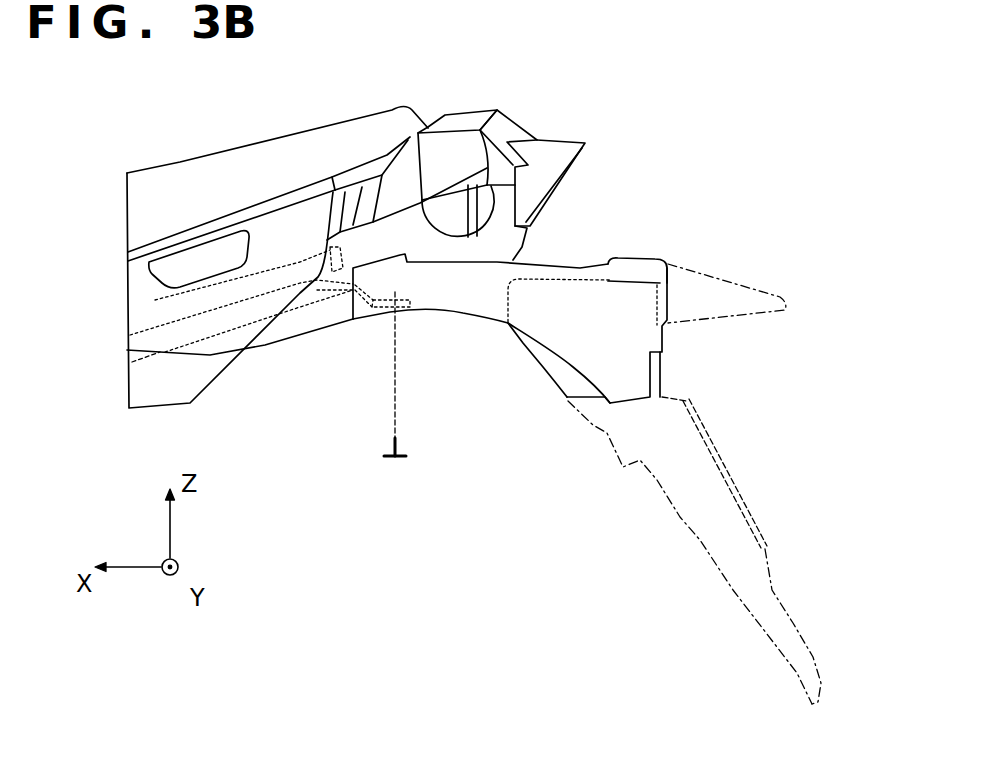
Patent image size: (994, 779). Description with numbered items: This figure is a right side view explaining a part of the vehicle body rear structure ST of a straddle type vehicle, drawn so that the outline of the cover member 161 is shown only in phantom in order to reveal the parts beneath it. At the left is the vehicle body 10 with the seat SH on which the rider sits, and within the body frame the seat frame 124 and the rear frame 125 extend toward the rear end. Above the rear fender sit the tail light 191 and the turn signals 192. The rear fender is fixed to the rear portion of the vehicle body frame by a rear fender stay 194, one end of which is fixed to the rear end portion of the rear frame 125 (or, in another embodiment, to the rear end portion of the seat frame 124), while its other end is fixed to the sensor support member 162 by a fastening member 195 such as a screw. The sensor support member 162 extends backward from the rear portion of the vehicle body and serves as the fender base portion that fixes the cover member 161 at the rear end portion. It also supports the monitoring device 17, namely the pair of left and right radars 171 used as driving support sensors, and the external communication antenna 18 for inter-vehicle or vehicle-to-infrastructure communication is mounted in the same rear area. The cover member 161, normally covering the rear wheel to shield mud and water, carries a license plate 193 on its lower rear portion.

The vehicle body 10 is at (228, 372).
The seat SH is at (252, 145).
The seat frame 124 is at (155, 300).
The rear frame 125 is at (147, 328).
The turn signals 192 is at (479, 128).
The tail light 191 is at (587, 142).
The vehicle body rear structure ST is at (763, 132).
The monitoring device 17 is at (512, 522).
The sensor support member 162 is at (463, 315).
The radars 171 is at (542, 375).
The external communication antenna 18 is at (645, 258).
The cover member 161 is at (722, 275).
The license plate 193 is at (767, 550).
The rear fender stay 194 is at (360, 317).
The fastening member 195 is at (393, 457).